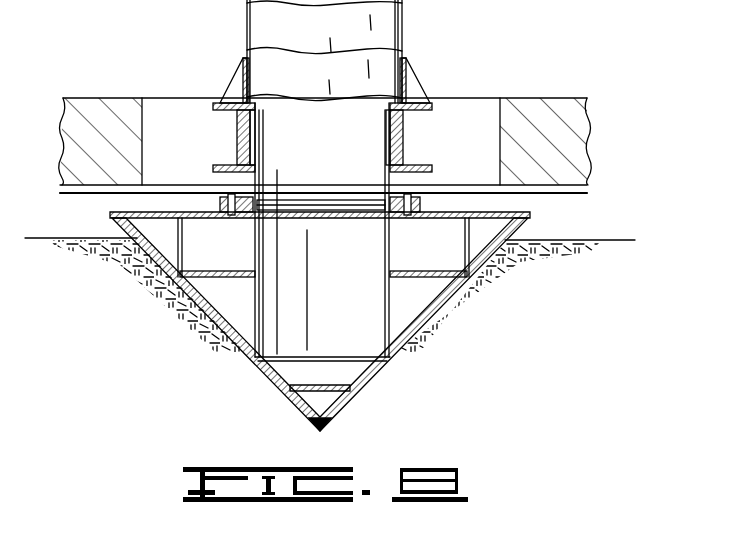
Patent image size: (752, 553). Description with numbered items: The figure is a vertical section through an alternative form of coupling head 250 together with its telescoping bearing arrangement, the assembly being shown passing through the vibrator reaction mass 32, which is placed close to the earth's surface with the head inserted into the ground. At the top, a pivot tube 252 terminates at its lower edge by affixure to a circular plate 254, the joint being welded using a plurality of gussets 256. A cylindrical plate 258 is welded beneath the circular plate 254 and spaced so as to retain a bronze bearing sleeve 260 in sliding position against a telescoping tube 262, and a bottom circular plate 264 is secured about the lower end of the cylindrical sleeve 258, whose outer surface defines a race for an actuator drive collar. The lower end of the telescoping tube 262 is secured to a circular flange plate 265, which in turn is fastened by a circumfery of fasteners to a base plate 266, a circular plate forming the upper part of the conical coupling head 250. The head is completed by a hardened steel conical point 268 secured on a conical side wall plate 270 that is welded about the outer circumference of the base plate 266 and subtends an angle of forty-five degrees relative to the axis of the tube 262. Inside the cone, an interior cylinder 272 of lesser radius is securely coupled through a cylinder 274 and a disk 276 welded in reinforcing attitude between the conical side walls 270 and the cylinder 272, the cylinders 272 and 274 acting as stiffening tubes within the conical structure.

The vibrator reaction mass 32 is at (543, 110).
The coupling head 250 is at (570, 223).
The pivot tube 252 is at (404, 22).
The circular plate 254 is at (428, 103).
The gussets 256 is at (234, 85).
The cylindrical plate 258 is at (405, 141).
The bronze bearing sleeve 260 is at (405, 123).
The telescoping tube 262 is at (386, 190).
The bottom circular plate 264 is at (428, 170).
The circular flange plate 265 is at (420, 207).
The base plate 266 is at (487, 217).
The conical point 268 is at (335, 419).
The conical side wall plate 270 is at (400, 355).
The interior cylinder 272 is at (262, 306).
The cylinder 274 is at (183, 247).
The disk 276 is at (440, 278).